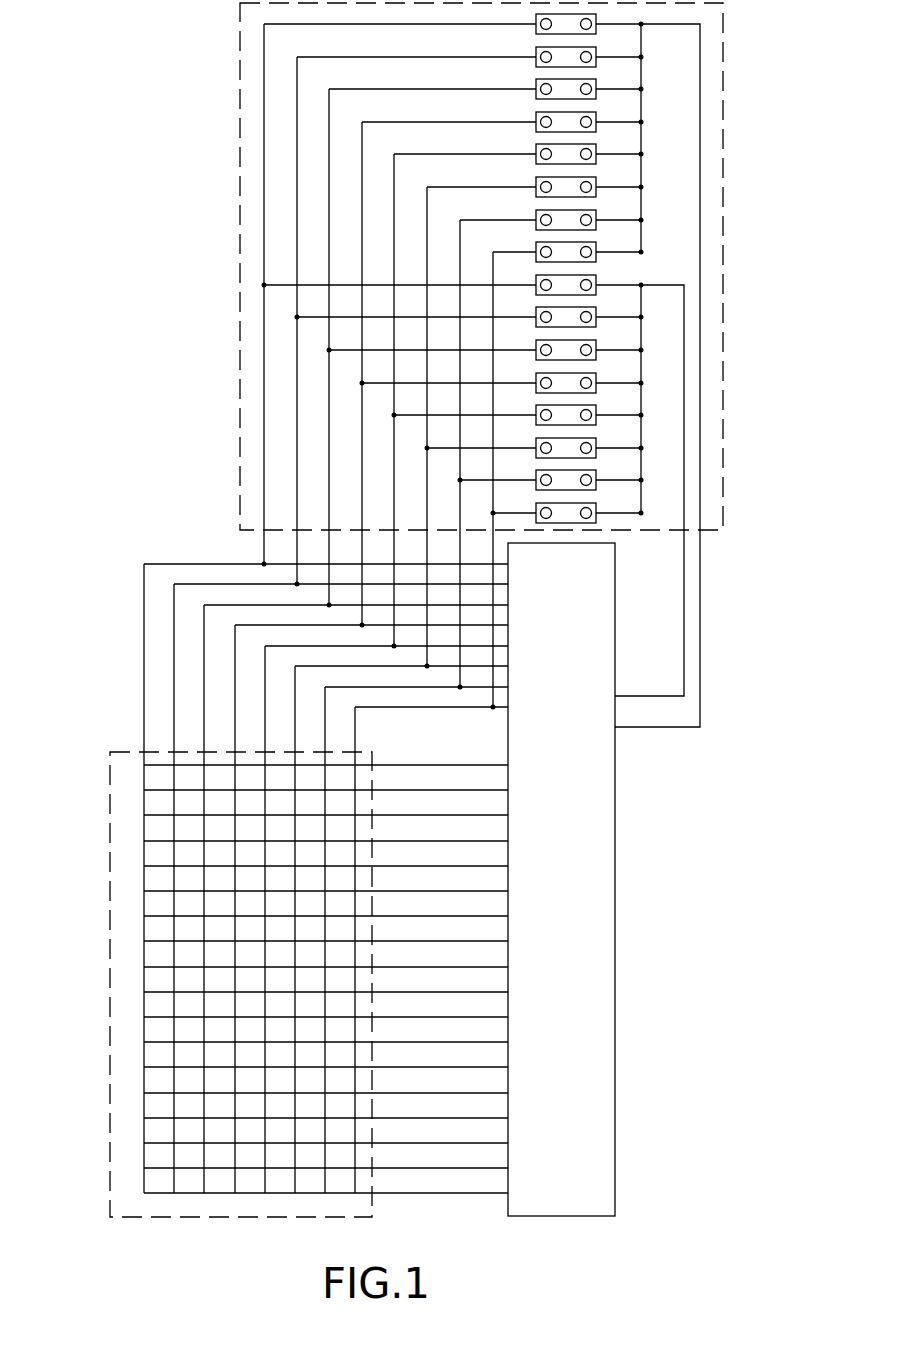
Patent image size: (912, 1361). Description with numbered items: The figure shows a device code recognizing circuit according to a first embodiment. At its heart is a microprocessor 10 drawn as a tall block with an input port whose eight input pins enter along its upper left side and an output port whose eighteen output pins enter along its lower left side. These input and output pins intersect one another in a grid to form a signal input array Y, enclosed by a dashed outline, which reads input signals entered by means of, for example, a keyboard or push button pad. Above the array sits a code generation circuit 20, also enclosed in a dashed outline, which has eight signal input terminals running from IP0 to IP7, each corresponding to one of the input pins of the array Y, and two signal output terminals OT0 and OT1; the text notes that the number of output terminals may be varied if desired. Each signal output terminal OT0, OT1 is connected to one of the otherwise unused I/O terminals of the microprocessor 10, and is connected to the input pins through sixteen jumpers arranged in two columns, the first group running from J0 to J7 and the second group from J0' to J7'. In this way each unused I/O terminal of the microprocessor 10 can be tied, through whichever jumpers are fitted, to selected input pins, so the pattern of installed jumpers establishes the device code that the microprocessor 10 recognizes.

The microprocessor 10 is at (606, 866).
The code generation circuit 20 is at (240, 200).
The signal input array Y is at (110, 815).
The jumper J0 is at (654, 33).
The jumper J7 is at (658, 246).
The jumper J0' is at (661, 280).
The jumper J7' is at (659, 516).
The signal input terminal IP0 is at (263, 543).
The signal input terminal IP7 is at (492, 709).
The signal output terminal OT0 is at (684, 614).
The signal output terminal OT1 is at (700, 688).